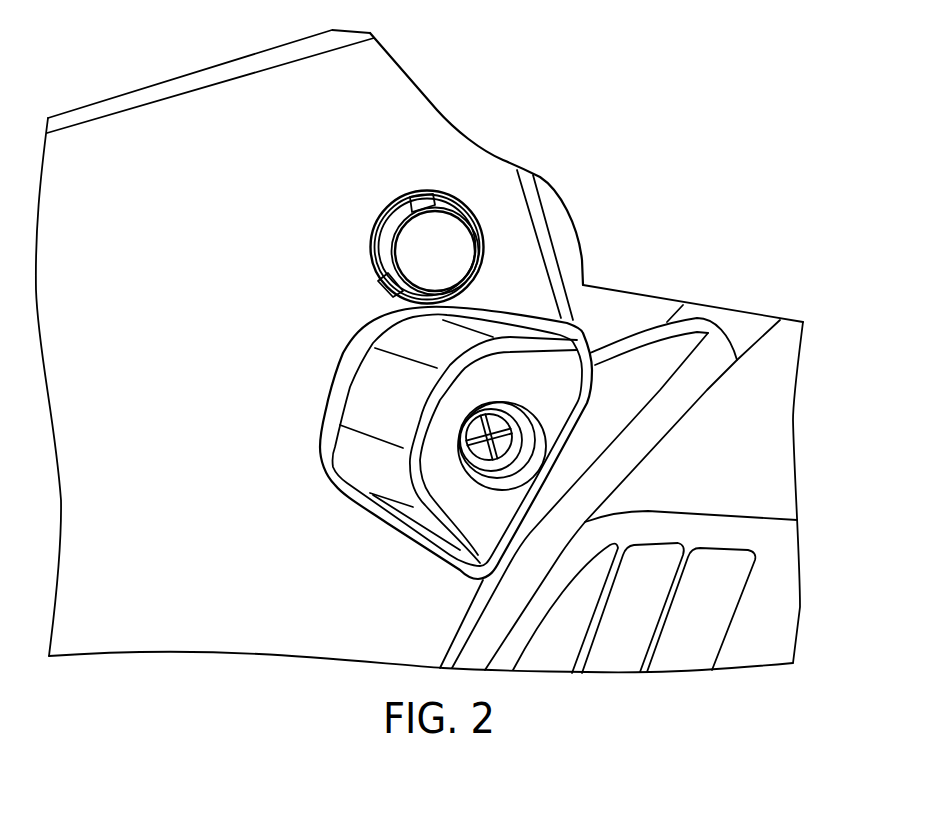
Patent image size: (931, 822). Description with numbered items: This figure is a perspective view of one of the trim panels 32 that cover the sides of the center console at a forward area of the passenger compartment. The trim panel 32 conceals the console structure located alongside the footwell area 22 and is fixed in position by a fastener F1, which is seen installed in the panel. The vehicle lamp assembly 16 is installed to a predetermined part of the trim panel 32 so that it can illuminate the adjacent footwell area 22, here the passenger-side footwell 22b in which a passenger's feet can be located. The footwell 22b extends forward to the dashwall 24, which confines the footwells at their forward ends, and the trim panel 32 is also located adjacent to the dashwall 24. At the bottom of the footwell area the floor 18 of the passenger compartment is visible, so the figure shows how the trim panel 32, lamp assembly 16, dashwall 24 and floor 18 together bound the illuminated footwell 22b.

The footwell area 22 is at (378, 134).
The trim panel 32 is at (360, 95).
The dashwall 24 is at (737, 478).
The footwell 22b is at (748, 413).
The floor 18 is at (560, 635).
The vehicle lamp assembly 16 is at (482, 230).
The fastener F1 is at (507, 440).